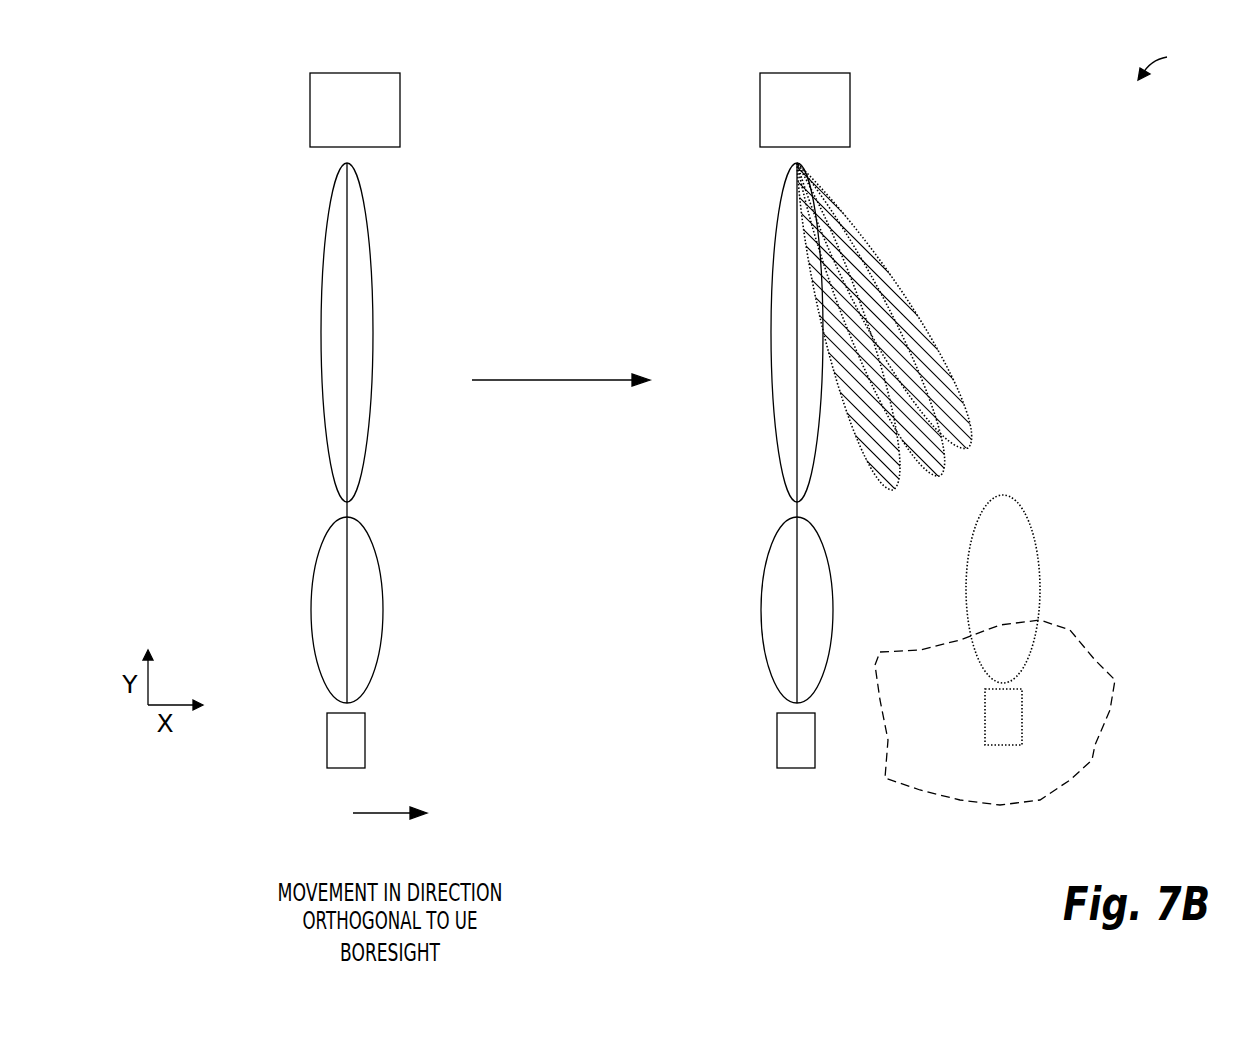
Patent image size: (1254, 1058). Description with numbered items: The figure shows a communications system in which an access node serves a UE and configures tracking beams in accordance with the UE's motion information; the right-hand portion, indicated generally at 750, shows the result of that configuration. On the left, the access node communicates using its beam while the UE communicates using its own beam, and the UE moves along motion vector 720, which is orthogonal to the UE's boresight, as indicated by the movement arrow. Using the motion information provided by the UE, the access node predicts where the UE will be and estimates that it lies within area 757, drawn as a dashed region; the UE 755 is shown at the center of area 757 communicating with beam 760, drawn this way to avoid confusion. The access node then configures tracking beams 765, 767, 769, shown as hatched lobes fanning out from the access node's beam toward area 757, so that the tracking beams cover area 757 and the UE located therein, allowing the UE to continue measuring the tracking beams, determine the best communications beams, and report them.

The motion vector 720 is at (319, 841).
The diagram 750 is at (1175, 61).
The UE 755 is at (984, 691).
The area 757 is at (1073, 632).
The beam 760 is at (967, 564).
The tracking beam 765 is at (879, 484).
The tracking beam 767 is at (941, 466).
The tracking beam 769 is at (961, 407).